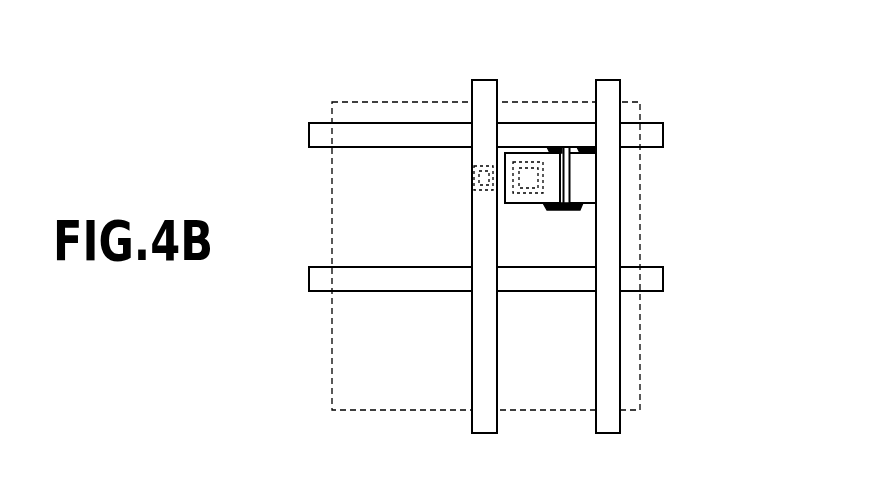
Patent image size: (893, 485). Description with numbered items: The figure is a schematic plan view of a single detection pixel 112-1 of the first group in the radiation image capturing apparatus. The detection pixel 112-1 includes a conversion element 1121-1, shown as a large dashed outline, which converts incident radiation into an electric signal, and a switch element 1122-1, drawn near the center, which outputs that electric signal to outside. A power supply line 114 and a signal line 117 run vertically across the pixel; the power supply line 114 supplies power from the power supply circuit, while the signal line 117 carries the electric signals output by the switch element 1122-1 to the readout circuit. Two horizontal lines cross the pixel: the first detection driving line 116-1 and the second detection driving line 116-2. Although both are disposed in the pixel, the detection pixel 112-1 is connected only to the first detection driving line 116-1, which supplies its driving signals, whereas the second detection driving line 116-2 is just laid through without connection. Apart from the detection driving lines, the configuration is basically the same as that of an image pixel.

The detection pixel of the first group 112-1 is at (371, 81).
The conversion element 1121-1 is at (640, 200).
The switch element 1122-1 is at (565, 150).
The power supply line 114 is at (487, 80).
The signal line 117 is at (613, 80).
The first detection driving line 116-1 is at (650, 123).
The second detection driving line 116-2 is at (662, 279).